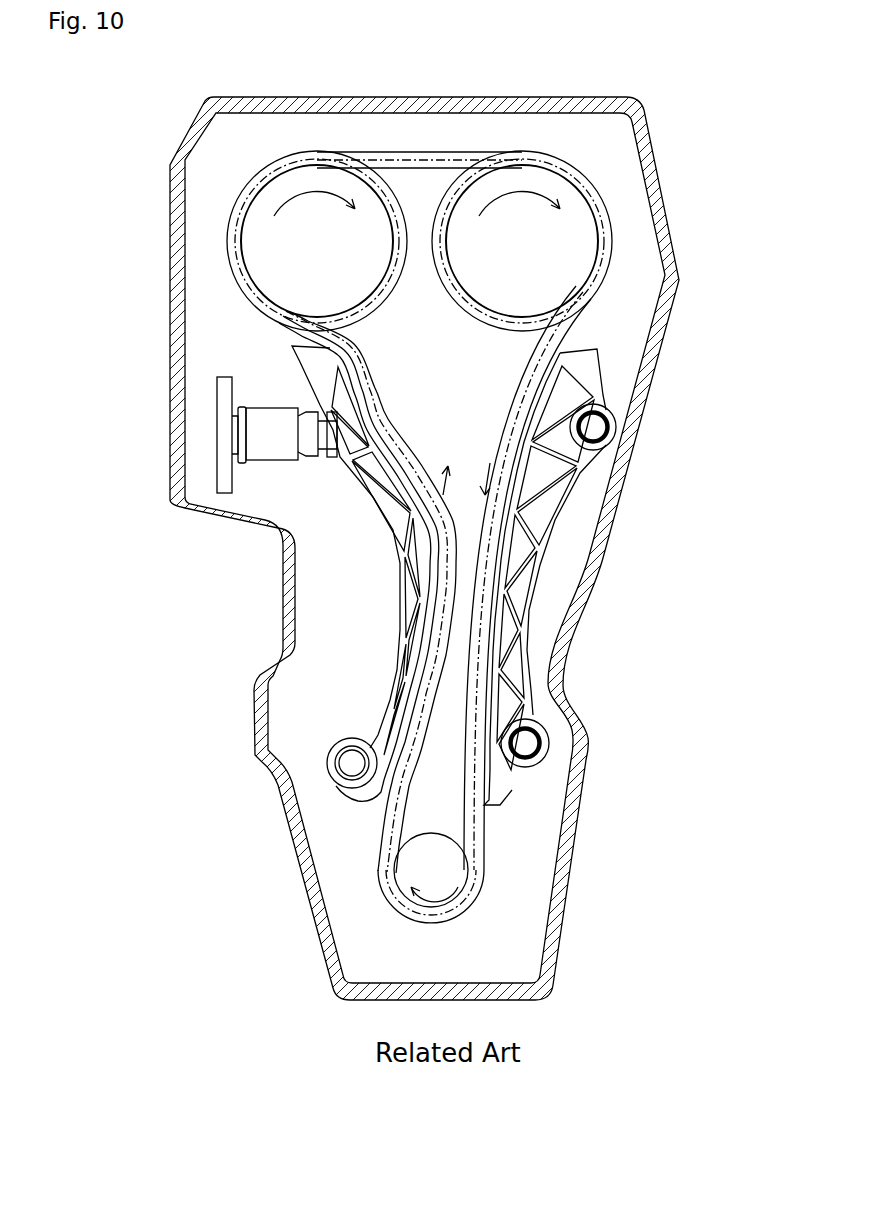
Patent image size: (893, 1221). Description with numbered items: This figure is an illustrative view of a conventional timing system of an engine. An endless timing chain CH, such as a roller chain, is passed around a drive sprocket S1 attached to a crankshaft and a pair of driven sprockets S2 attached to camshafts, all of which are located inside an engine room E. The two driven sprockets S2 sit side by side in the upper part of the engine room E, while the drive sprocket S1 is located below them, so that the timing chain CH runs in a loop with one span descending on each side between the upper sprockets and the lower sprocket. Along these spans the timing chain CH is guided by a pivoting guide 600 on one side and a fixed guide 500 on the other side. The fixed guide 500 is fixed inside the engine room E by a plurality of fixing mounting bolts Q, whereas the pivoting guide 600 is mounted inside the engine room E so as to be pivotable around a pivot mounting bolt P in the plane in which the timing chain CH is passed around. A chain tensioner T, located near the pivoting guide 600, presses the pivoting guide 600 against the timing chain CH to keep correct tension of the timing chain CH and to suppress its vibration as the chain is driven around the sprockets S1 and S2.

The timing chain CH is at (422, 160).
The driven sprocket S2 is at (270, 233).
The drive sprocket S1 is at (460, 878).
The chain tensioner T is at (268, 420).
The pivoting guide 600 is at (375, 520).
The fixed guide 500 is at (553, 545).
The pivot mounting bolt P is at (350, 763).
The fixing mounting bolt Q is at (600, 427).
The engine room E is at (287, 797).